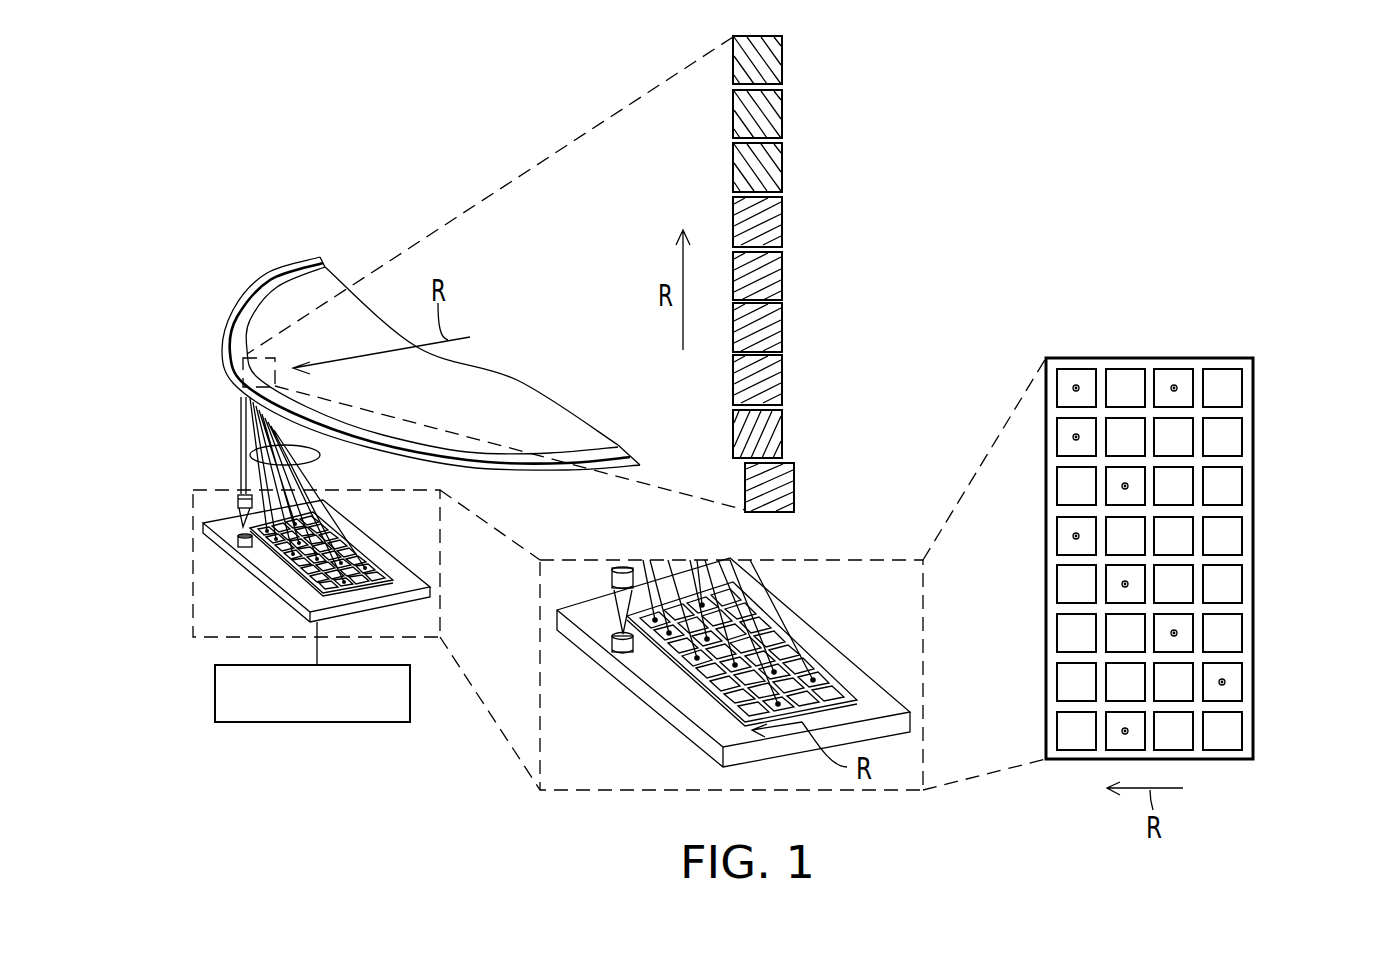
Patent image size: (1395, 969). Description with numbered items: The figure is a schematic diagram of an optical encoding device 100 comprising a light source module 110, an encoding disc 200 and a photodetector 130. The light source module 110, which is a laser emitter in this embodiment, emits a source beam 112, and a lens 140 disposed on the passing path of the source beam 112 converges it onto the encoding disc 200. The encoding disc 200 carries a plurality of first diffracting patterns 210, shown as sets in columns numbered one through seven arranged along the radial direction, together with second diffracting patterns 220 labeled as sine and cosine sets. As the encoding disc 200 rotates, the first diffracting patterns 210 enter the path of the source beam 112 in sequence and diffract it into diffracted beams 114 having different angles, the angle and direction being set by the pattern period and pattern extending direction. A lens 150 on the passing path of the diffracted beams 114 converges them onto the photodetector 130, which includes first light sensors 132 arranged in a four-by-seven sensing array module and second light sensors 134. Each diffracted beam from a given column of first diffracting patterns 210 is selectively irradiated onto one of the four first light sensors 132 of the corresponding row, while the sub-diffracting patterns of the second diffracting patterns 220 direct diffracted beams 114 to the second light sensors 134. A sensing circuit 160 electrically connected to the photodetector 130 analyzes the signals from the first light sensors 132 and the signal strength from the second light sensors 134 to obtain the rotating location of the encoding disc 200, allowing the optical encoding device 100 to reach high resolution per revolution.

The optical encoding device 100 is at (1383, 873).
The light source module 110 is at (240, 547).
The source beam 112 is at (240, 524).
The diffracted beams 114 is at (333, 500).
The photodetector 130 is at (307, 570).
The first light sensors 132 is at (1243, 435).
The second light sensors 134 is at (1073, 368).
The lens 140 is at (238, 504).
The lens 150 is at (252, 455).
The sensing circuit 160 is at (215, 692).
The encoding disc 200 is at (223, 340).
The first diffracting patterns 210 is at (783, 56).
The second diffracting patterns 220 is at (770, 438).